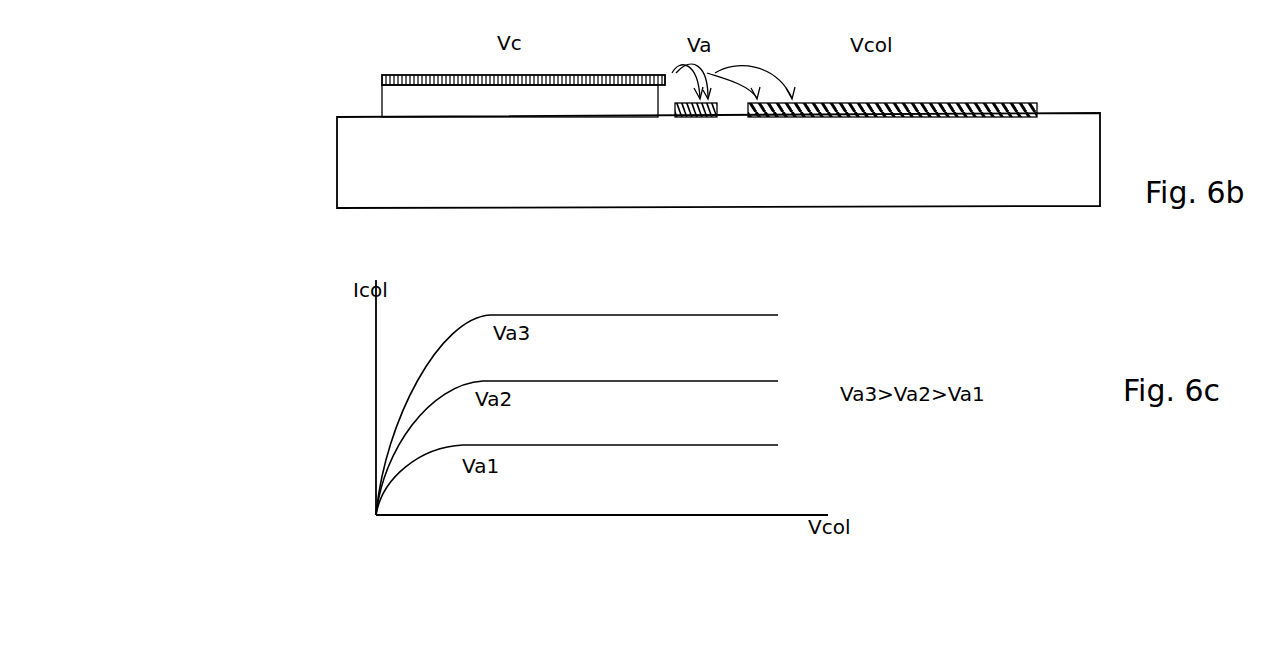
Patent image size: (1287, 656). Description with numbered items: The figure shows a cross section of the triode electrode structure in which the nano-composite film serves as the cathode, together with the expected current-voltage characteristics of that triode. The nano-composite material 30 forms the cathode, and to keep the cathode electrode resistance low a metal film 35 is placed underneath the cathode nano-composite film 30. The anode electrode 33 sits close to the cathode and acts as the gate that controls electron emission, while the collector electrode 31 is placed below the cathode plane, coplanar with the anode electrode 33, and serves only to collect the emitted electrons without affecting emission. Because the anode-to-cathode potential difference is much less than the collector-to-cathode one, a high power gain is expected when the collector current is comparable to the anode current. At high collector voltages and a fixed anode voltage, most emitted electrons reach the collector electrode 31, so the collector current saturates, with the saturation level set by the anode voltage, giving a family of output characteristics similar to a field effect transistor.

The nano-composite material 30 is at (473, 75).
The collector electrode 31 is at (887, 102).
The anode electrode 33 is at (692, 118).
The metal film 35 is at (382, 78).